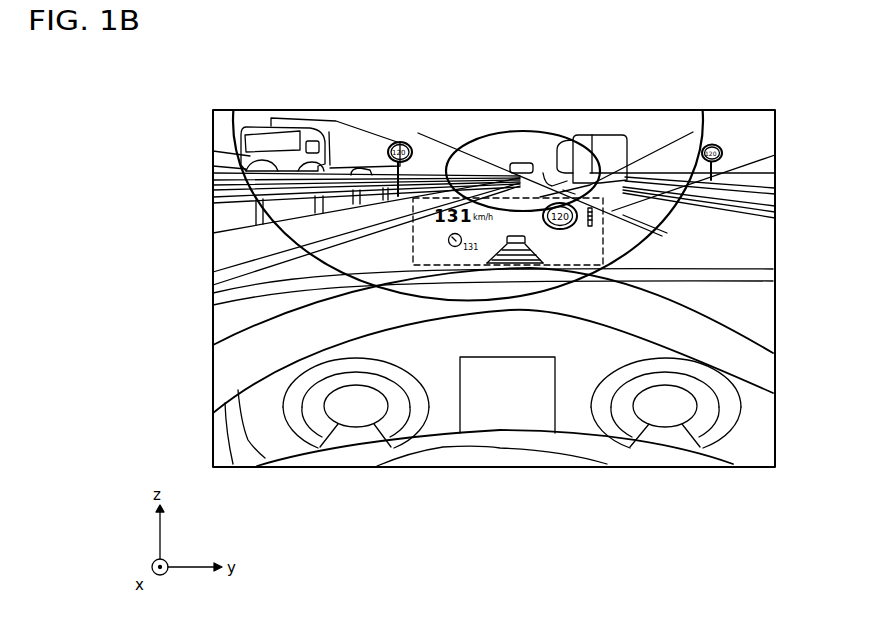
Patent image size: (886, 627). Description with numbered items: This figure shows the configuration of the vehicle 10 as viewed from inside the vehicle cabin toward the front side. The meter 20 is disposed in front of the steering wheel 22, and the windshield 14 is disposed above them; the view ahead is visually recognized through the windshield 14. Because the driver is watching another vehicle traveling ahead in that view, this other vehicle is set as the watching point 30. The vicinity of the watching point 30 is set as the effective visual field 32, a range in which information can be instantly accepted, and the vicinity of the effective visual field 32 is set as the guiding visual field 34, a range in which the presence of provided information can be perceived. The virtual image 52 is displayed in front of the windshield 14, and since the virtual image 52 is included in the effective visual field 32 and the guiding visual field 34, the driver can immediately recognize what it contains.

The vehicle 10 is at (507, 568).
The windshield 14 is at (755, 258).
The meter 20 is at (727, 413).
The steering wheel 22 is at (747, 352).
The watching point 30 is at (520, 132).
The effective visual field 32 is at (593, 134).
The guiding visual field 34 is at (703, 130).
The virtual image 52 is at (437, 168).